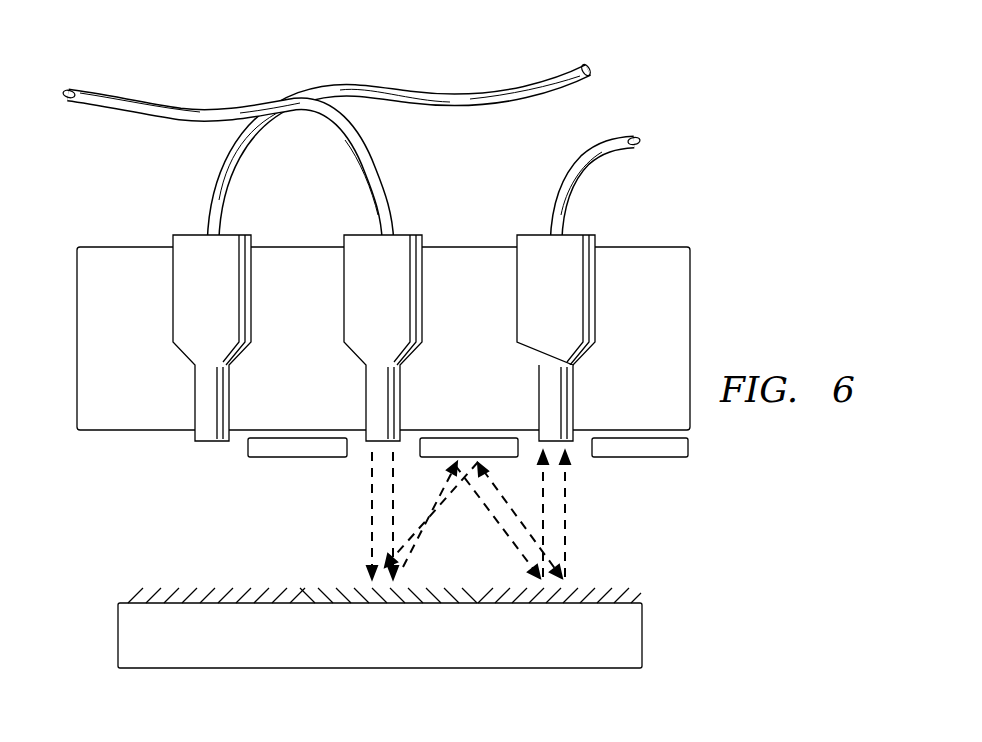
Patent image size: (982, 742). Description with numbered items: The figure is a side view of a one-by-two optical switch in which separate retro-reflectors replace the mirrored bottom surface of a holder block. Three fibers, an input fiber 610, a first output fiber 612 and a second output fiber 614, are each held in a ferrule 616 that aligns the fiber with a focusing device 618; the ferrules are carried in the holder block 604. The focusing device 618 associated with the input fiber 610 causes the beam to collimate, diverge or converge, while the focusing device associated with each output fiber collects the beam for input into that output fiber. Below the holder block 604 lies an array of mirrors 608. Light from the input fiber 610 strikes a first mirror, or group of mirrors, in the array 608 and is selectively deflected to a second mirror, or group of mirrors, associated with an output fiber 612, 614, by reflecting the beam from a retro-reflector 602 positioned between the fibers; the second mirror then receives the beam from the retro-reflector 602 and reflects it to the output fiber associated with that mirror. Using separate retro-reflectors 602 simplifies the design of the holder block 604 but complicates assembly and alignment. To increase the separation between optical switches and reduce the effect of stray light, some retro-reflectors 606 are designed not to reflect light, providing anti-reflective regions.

The retro-reflector 602 is at (283, 460).
The holder block 604 is at (691, 301).
The non-reflecting retro-reflector 606 is at (657, 459).
The array of mirrors 608 is at (645, 627).
The input fiber 610 is at (83, 110).
The first output fiber 612 is at (588, 183).
The second output fiber 614 is at (503, 83).
The ferrule 616 is at (405, 231).
The focusing device 618 is at (571, 404).